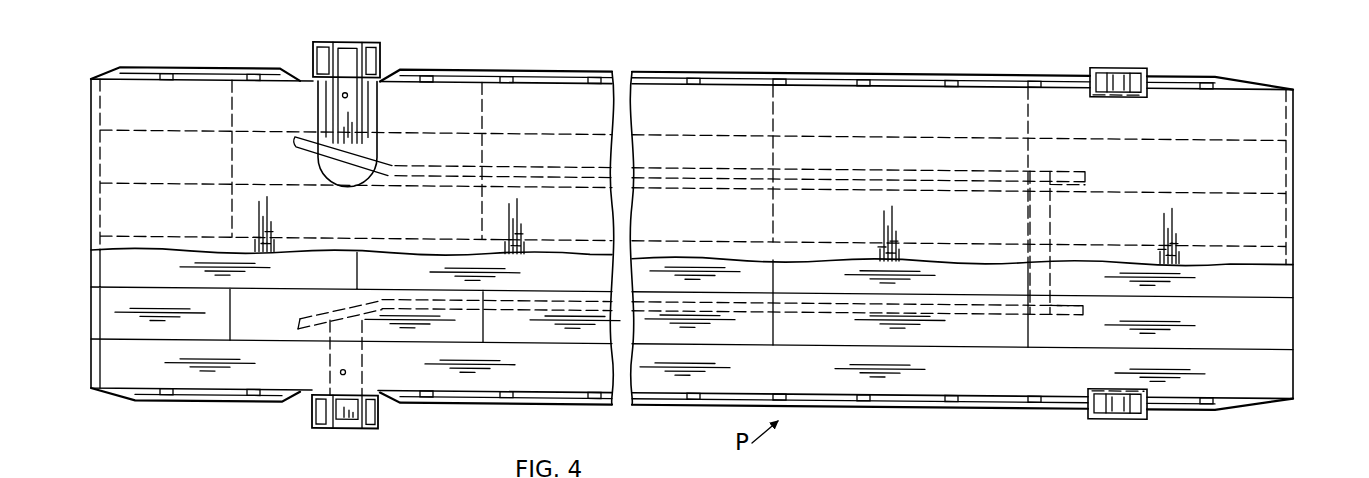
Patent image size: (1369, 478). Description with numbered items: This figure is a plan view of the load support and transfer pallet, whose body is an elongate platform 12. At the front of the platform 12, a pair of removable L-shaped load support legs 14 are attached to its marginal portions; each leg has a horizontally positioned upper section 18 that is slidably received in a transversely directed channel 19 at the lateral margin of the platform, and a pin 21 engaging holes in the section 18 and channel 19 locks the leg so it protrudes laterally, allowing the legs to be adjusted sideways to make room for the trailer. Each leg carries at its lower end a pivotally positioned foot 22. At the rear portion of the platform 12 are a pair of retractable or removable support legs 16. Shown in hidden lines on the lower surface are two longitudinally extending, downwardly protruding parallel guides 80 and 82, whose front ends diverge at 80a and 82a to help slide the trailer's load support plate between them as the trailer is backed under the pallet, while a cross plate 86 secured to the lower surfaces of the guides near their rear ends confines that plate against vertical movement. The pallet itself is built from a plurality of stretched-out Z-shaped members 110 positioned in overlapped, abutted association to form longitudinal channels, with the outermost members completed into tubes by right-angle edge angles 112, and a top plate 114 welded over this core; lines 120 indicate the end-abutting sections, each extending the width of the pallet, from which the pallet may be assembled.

The platform 12 is at (900, 404).
The removable load support legs 14 is at (383, 53).
The retractable support legs 16 is at (1143, 68).
The upper section 18 is at (352, 102).
The channel 19 is at (366, 113).
The pin 21 is at (342, 96).
The foot 22 is at (318, 53).
The guide 80 is at (776, 308).
The diverging front end of guide 80a is at (320, 316).
The guide 82 is at (693, 172).
The diverging front end of guide 82a is at (322, 158).
The cross plate 86 is at (1052, 236).
The Z-shaped members 110 is at (110, 308).
The edge angles 112 is at (112, 362).
The top plate 114 is at (113, 206).
The section lines 120 is at (777, 127).